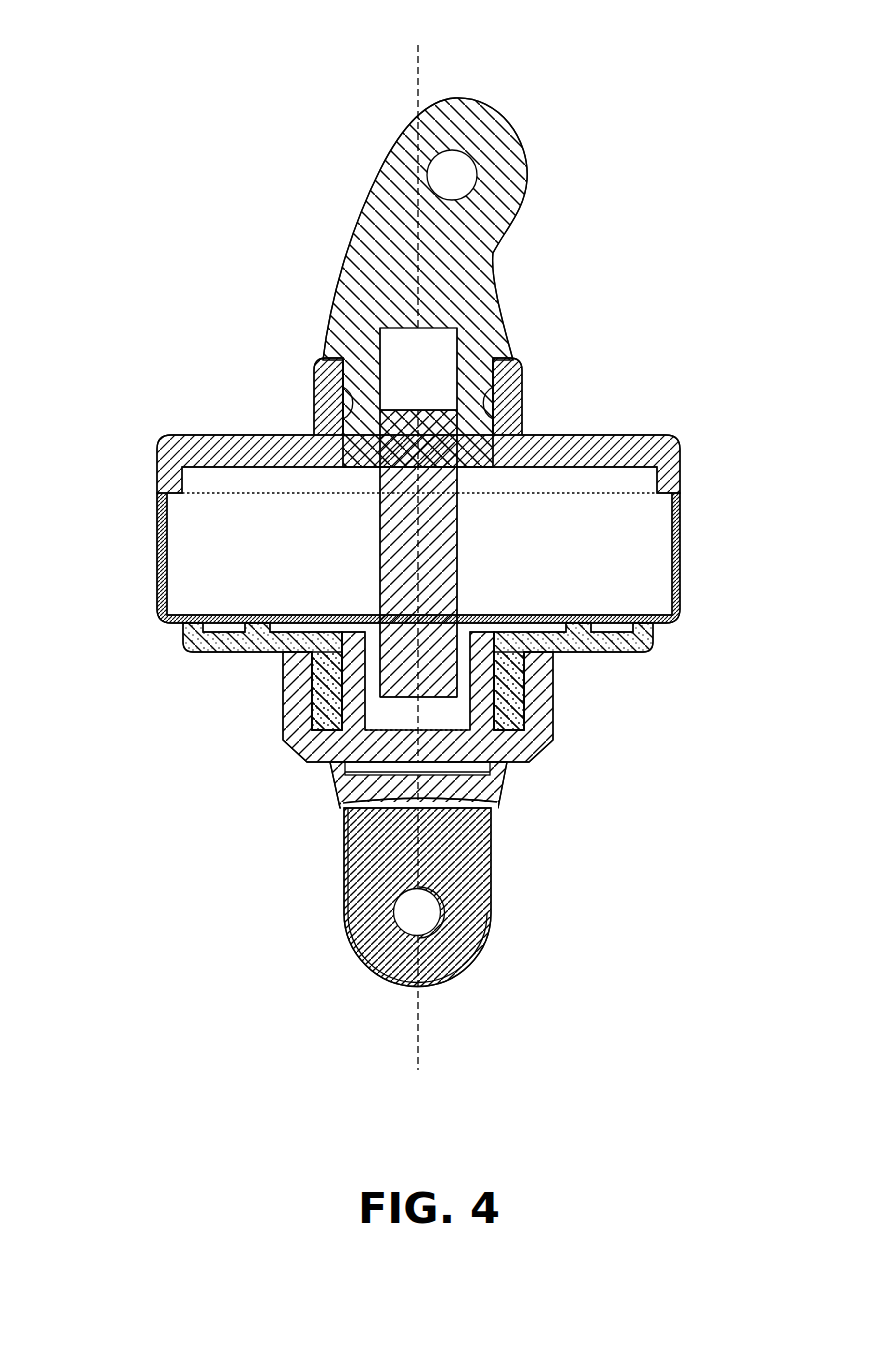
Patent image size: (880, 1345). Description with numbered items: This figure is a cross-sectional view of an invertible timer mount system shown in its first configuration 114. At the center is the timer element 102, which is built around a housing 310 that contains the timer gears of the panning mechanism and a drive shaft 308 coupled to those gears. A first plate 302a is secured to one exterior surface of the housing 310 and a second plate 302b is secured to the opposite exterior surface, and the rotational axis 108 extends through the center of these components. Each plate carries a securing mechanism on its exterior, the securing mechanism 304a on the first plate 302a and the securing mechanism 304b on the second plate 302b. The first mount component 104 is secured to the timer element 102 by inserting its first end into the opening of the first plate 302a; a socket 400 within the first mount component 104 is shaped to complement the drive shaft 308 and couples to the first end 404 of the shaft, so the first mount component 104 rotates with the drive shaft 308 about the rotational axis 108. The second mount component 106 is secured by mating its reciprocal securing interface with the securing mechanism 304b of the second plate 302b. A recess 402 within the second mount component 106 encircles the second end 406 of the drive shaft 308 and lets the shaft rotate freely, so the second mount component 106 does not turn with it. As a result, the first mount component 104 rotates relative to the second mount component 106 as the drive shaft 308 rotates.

The timer element 102 is at (142, 533).
The first mount component 104 is at (340, 208).
The second mount component 106 is at (503, 872).
The rotational axis 108 is at (420, 65).
The first configuration 114 is at (345, 42).
The first plate 302a is at (758, 415).
The second plate 302b is at (193, 662).
The securing mechanism of the first plate 304a is at (518, 373).
The securing mechanism of the second plate 304b is at (523, 683).
The drive shaft 308 is at (445, 450).
The housing 310 is at (523, 727).
The socket 400 is at (440, 345).
The recess 402 is at (390, 718).
The first end of the drive shaft 404 is at (393, 430).
The second end of the drive shaft 406 is at (388, 677).